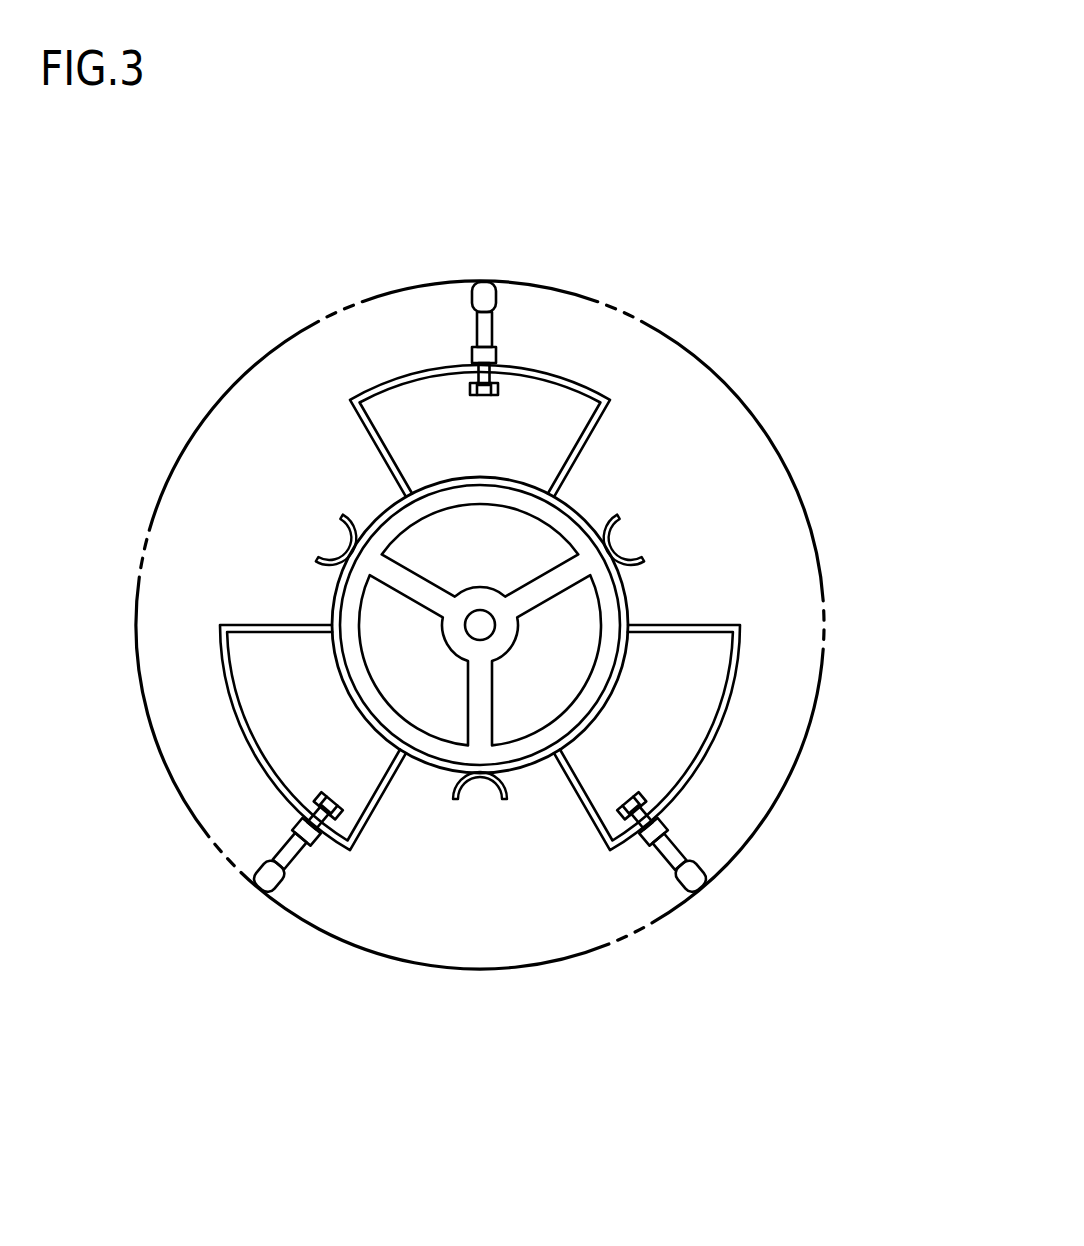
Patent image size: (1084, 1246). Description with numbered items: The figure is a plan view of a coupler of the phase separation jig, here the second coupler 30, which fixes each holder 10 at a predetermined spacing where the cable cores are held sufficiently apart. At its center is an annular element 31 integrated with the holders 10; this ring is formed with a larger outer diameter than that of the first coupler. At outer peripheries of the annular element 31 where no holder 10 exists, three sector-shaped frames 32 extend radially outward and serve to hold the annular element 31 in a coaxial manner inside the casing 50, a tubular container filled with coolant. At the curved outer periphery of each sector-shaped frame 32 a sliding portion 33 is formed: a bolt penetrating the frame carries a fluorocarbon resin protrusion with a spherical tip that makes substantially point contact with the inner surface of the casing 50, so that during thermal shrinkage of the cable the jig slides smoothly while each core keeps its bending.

The holder 10 is at (647, 553).
The second coupler 30 is at (581, 631).
The annular element 31 is at (438, 747).
The sector-shaped frame 32 is at (718, 725).
The sliding portion 33 is at (670, 857).
The casing 50 is at (275, 345).